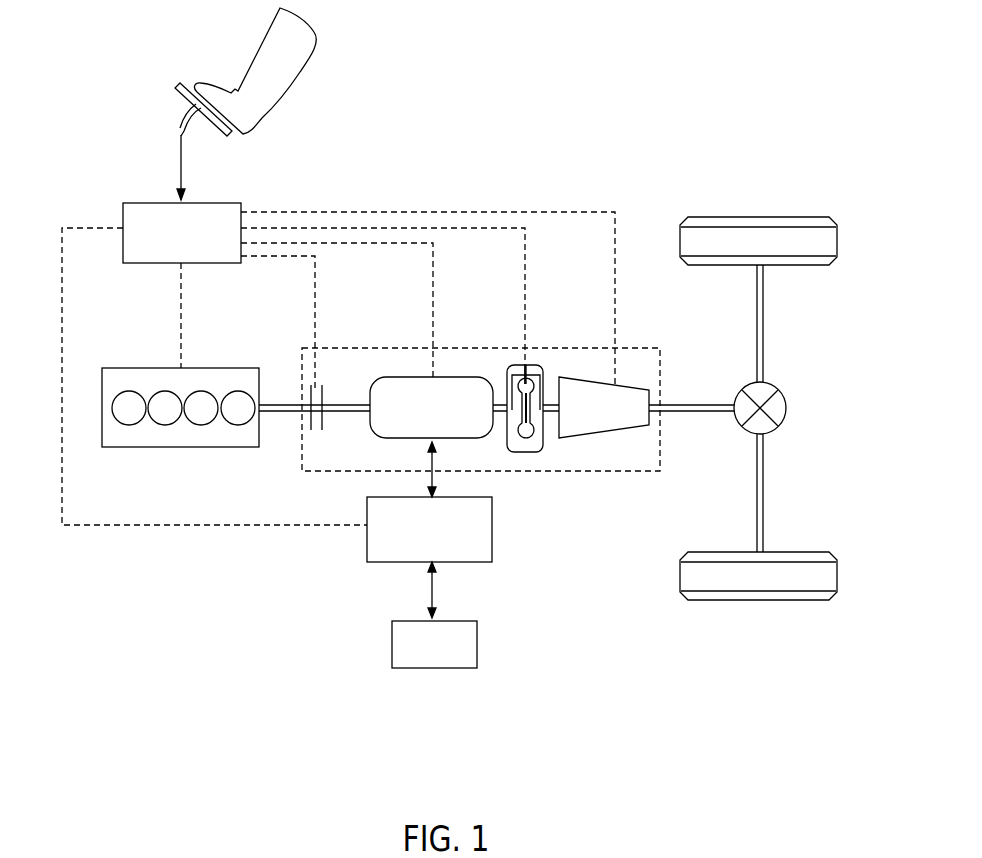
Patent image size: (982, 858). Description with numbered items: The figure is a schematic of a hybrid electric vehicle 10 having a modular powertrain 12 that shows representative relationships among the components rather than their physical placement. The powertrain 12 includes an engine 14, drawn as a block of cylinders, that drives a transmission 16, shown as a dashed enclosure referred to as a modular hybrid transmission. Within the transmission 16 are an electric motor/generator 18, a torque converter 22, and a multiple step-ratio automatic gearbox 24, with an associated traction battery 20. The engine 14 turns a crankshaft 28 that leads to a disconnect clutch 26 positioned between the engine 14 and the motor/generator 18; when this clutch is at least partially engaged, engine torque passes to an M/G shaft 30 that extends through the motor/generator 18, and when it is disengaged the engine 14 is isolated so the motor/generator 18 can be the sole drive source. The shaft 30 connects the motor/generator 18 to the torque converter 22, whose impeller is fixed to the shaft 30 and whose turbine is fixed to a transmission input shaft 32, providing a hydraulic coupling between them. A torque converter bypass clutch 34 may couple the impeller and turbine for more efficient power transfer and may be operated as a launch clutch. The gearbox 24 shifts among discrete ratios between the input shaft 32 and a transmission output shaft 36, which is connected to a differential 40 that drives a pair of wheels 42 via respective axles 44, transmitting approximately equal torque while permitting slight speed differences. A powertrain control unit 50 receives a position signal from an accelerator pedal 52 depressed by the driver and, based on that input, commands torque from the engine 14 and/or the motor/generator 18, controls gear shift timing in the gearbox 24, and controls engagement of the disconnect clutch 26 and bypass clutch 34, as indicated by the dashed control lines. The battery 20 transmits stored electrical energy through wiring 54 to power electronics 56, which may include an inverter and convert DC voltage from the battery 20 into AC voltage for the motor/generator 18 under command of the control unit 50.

The hybrid electric vehicle 10 is at (661, 157).
The powertrain 12 is at (239, 568).
The engine 14 is at (118, 368).
The transmission 16 is at (468, 348).
The electric motor/generator 18 is at (413, 377).
The traction battery 20 is at (392, 640).
The torque converter 22 is at (522, 452).
The gearbox 24 is at (598, 438).
The disconnect clutch 26 is at (311, 432).
The crankshaft 28 is at (283, 404).
The M/G shaft 30 is at (352, 404).
The transmission input shaft 32 is at (551, 403).
The torque converter bypass clutch 34 is at (526, 364).
The transmission output shaft 36 is at (702, 404).
The differential 40 is at (786, 408).
The vehicle traction wheels 42 is at (760, 217).
The axles 44 is at (763, 330).
The powertrain control unit 50 is at (133, 203).
The accelerator pedal 52 is at (177, 92).
The wiring 54 is at (430, 588).
The power electronics 56 is at (492, 535).